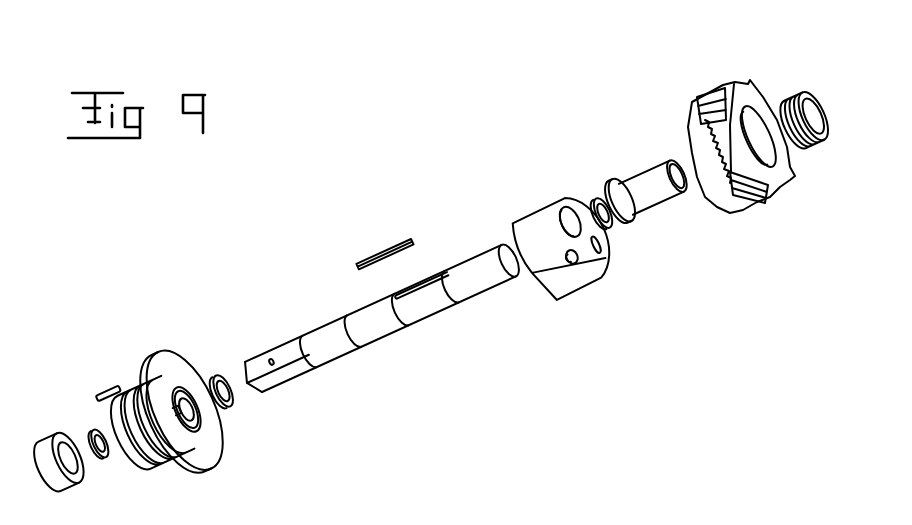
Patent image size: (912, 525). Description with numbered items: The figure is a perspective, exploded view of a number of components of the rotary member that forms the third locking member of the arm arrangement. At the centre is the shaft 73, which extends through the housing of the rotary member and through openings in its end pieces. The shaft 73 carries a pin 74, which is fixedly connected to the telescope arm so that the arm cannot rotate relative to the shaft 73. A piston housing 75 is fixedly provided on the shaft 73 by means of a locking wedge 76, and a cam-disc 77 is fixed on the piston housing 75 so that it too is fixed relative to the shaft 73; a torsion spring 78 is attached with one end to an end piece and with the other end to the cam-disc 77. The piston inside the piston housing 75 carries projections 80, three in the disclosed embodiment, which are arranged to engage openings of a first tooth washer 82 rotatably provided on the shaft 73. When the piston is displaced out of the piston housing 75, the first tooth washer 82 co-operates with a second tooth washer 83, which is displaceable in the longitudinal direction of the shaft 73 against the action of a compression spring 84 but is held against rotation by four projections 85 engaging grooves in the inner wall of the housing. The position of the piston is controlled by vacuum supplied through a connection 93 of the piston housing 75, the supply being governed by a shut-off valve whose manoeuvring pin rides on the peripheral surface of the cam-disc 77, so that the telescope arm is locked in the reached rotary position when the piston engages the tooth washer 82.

The shaft 73 is at (370, 333).
The pin 74 is at (260, 358).
The piston housing 75 is at (533, 220).
The locking wedge 76 is at (378, 252).
The cam-disc 77 is at (167, 360).
The torsion spring 78 is at (102, 395).
The projections 80 is at (606, 247).
The first tooth washer 82 is at (690, 150).
The second tooth washer 83 is at (730, 163).
The compression spring 84 is at (800, 92).
The projections 85 is at (746, 85).
The connection 93 is at (574, 260).